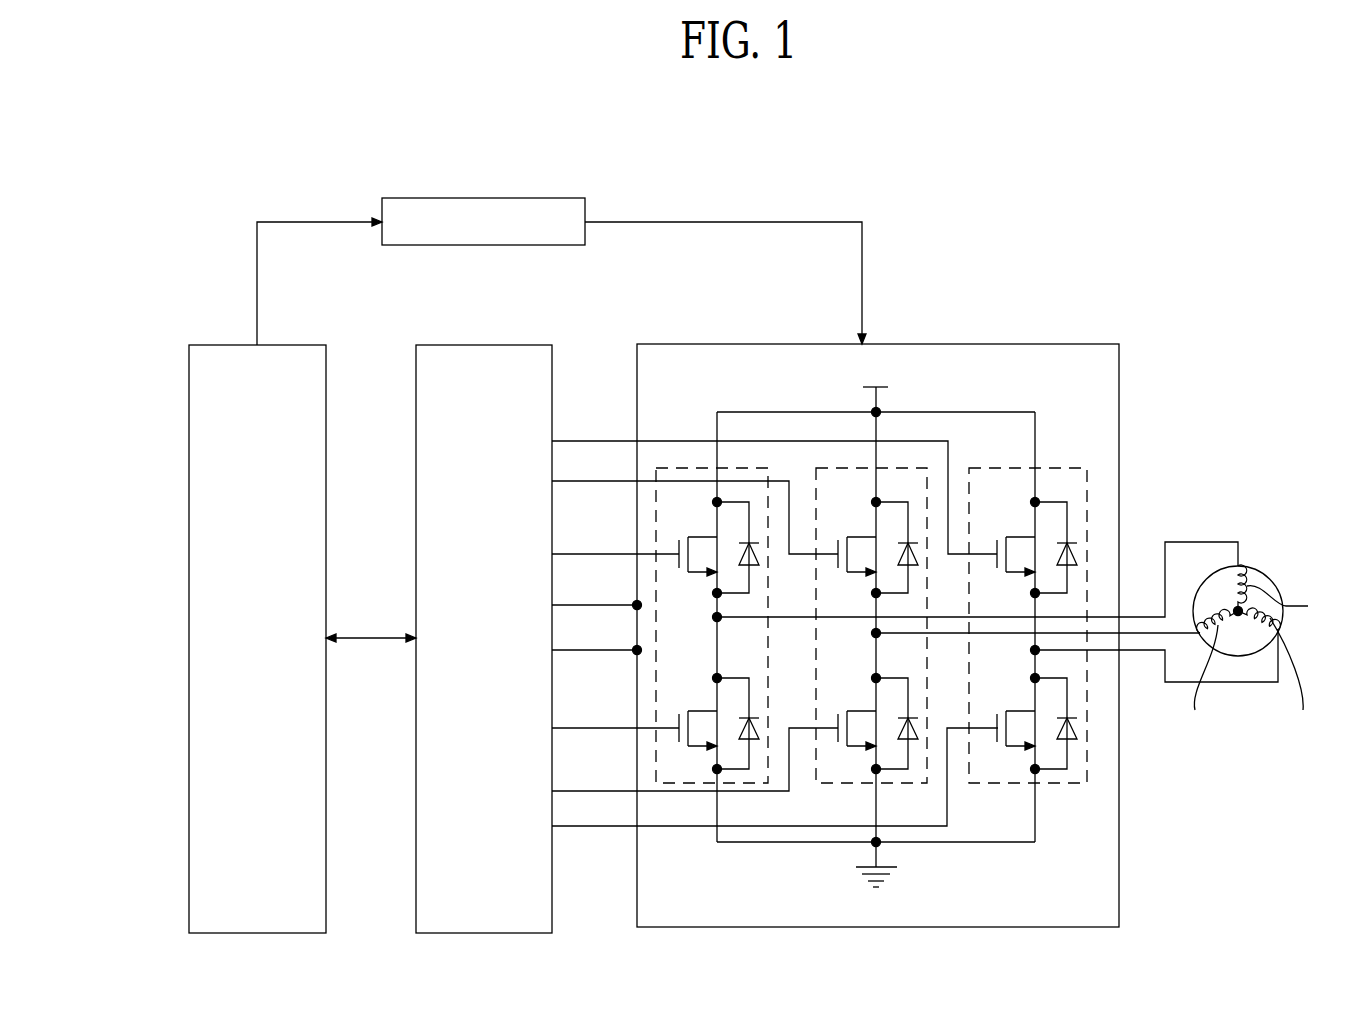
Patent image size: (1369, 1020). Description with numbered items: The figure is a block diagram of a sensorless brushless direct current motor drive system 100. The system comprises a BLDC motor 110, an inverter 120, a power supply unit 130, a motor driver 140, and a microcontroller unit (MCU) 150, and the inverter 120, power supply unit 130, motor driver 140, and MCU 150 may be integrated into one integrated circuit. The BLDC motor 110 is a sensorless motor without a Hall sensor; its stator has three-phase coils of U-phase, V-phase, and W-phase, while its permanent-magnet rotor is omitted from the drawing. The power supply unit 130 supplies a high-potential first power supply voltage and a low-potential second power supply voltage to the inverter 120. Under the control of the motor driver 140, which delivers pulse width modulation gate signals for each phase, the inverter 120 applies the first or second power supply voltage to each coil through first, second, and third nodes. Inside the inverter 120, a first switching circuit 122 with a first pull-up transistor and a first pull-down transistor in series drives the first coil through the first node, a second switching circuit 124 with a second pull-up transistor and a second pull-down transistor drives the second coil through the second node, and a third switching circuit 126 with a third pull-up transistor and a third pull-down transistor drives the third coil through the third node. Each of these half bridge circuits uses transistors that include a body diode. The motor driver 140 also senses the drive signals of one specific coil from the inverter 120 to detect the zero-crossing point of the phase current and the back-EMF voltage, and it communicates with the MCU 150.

The BLDC motor drive system 100 is at (238, 137).
The BLDC motor 110 is at (1267, 570).
The inverter 120 is at (1048, 344).
The first switching circuit 122 is at (742, 783).
The second switching circuit 124 is at (917, 783).
The third switching circuit 126 is at (1073, 783).
The power supply unit 130 is at (540, 197).
The motor driver 140 is at (517, 344).
The microcontroller unit (MCU) 150 is at (220, 344).